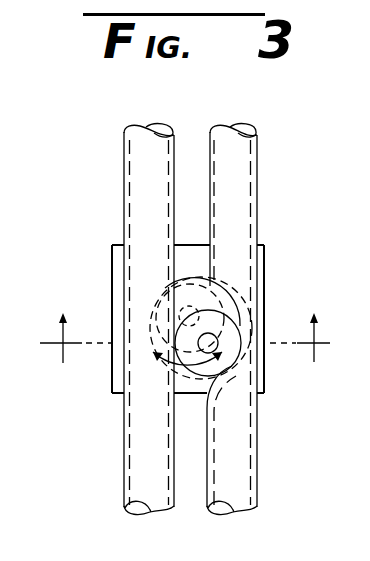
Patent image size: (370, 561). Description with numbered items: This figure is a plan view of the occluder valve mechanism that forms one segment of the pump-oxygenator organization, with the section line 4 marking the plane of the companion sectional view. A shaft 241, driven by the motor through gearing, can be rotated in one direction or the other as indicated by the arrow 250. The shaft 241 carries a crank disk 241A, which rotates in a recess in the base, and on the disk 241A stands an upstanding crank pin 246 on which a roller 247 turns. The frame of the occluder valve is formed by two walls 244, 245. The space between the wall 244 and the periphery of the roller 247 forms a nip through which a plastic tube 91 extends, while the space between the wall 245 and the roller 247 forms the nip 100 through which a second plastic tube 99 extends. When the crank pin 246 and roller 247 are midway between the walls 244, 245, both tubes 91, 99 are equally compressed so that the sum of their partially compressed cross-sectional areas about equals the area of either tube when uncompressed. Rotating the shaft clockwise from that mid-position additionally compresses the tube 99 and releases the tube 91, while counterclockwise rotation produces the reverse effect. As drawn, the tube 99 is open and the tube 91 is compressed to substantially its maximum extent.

The plastic tube 99 is at (132, 161).
The plastic tube 91 is at (243, 162).
The crank disk 241A is at (198, 281).
The wall 245 is at (113, 264).
The shaft 241 is at (232, 283).
The roller 247 is at (216, 322).
The wall 244 is at (218, 344).
The crank pin 246 is at (265, 388).
The arrow 250 is at (170, 385).
The nip 100 is at (137, 359).
The section line 4 is at (184, 338).